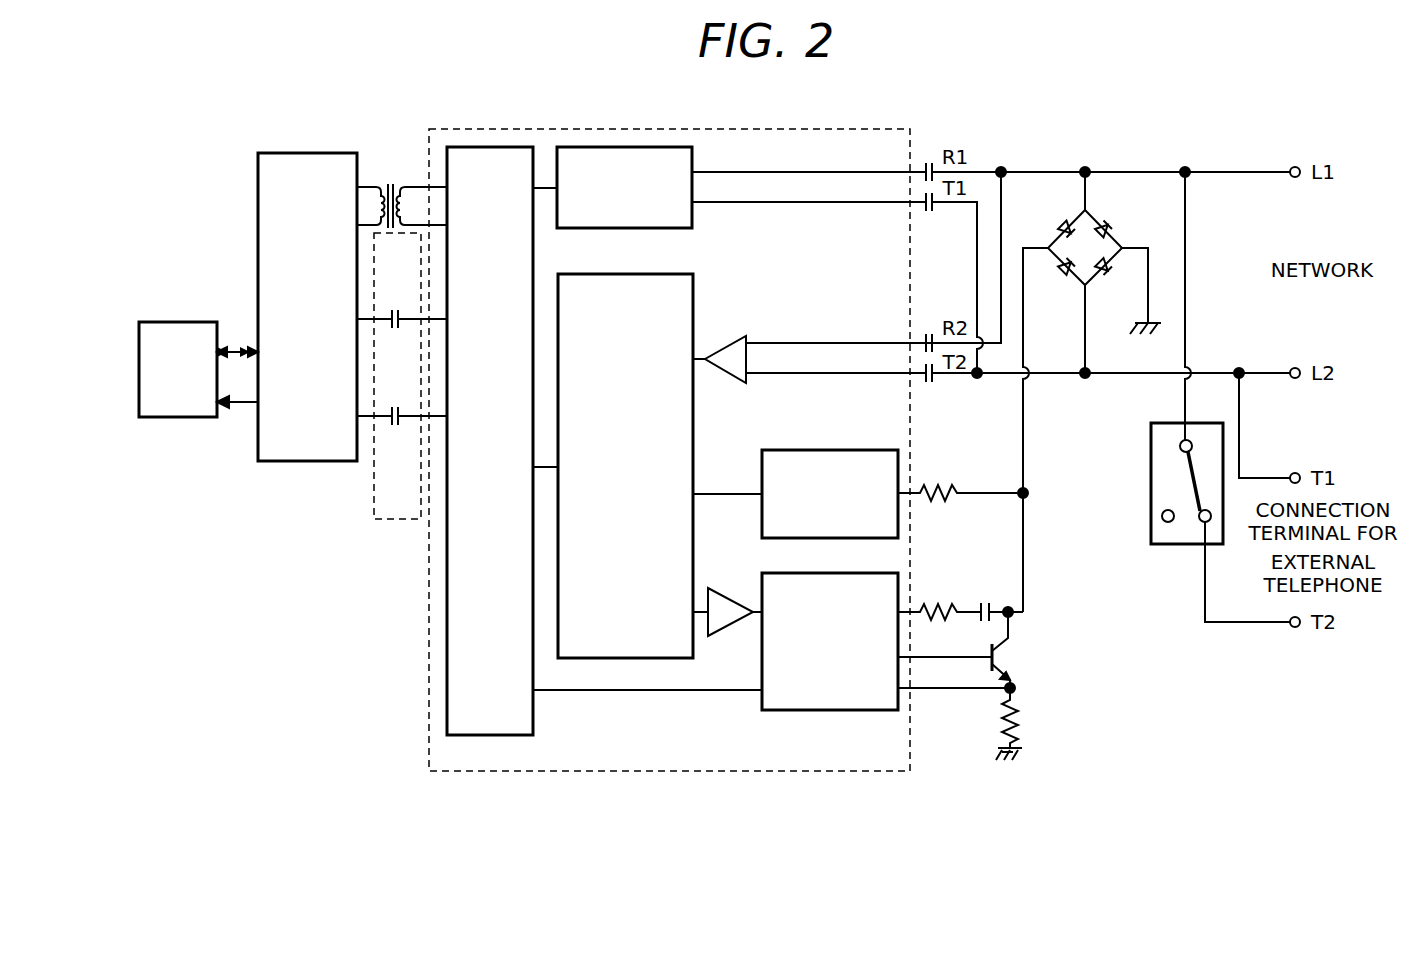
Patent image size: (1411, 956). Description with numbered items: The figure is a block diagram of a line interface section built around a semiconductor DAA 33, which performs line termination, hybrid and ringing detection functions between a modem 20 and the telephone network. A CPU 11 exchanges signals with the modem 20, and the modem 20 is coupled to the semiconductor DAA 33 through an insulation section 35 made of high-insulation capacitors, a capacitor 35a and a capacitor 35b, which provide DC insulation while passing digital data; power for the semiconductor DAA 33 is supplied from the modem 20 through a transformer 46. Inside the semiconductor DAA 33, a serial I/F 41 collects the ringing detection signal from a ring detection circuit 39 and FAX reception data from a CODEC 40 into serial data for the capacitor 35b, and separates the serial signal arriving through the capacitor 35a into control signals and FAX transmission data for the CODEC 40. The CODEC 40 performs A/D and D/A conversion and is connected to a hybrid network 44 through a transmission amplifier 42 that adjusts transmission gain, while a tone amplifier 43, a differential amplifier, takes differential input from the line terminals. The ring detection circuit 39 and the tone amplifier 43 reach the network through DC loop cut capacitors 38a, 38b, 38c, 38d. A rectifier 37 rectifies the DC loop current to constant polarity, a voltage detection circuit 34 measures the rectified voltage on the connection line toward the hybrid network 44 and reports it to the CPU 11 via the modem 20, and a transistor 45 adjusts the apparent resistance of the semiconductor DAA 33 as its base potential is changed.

The CPU 11 is at (167, 321).
The modem 20 is at (291, 152).
The transformer 46 is at (393, 182).
The insulation section 35 is at (402, 404).
The capacitor 35a is at (396, 309).
The capacitor 35b is at (397, 428).
The semiconductor DAA 33 is at (805, 772).
The serial I/F 41 is at (537, 716).
The ring detection circuit 39 is at (695, 158).
The CODEC 40 is at (695, 302).
The tone amplifier 43 is at (727, 383).
The transmission amplifier 42 is at (719, 591).
The voltage detection circuit 34 is at (862, 449).
The hybrid network 44 is at (866, 712).
The transistor 45 is at (1013, 657).
The DC loop cut capacitor 38a is at (929, 160).
The DC loop cut capacitor 38b is at (935, 216).
The DC loop cut capacitor 38c is at (929, 333).
The DC loop cut capacitor 38d is at (932, 388).
The rectifier 37 is at (1119, 234).